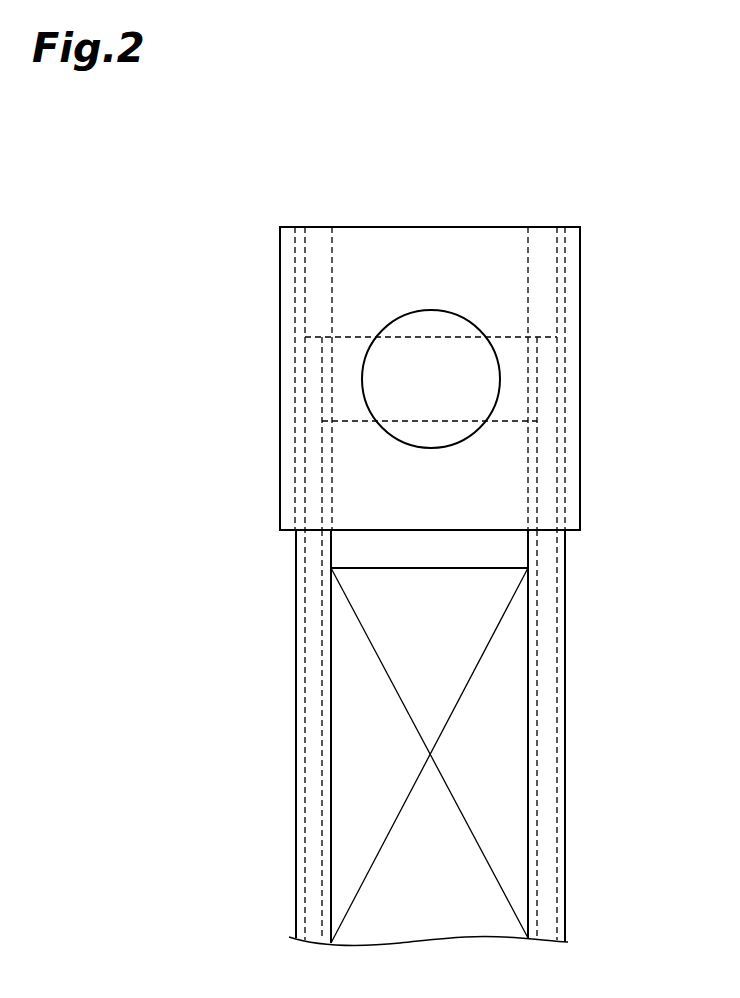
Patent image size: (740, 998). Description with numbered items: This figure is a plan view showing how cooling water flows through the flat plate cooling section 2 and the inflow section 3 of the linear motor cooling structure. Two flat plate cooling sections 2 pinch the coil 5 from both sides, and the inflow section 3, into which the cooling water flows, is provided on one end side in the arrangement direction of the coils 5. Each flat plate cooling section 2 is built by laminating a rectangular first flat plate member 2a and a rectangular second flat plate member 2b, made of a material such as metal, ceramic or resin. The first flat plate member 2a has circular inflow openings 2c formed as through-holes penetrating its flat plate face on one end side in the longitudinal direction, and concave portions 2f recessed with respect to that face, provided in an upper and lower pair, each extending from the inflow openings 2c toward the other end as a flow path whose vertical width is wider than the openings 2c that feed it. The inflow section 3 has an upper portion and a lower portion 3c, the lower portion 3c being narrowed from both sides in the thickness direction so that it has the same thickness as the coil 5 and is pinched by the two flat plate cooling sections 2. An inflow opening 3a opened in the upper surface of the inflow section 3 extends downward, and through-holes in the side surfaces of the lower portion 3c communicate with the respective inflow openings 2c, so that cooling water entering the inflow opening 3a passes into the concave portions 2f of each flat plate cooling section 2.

The flat plate cooling section 2 is at (284, 576).
The first flat plate member 2a is at (320, 237).
The second flat plate member 2b is at (297, 883).
The inflow opening 2c is at (325, 377).
The concave portion 2f is at (322, 703).
The inflow section 3 is at (506, 219).
The inflow opening 3a is at (426, 327).
The lower portion 3c is at (392, 227).
The coil 5 is at (510, 791).